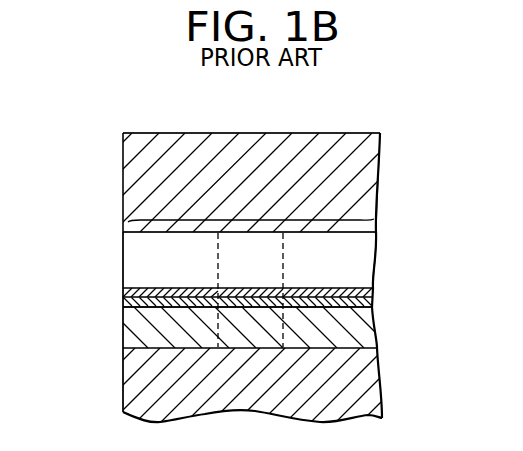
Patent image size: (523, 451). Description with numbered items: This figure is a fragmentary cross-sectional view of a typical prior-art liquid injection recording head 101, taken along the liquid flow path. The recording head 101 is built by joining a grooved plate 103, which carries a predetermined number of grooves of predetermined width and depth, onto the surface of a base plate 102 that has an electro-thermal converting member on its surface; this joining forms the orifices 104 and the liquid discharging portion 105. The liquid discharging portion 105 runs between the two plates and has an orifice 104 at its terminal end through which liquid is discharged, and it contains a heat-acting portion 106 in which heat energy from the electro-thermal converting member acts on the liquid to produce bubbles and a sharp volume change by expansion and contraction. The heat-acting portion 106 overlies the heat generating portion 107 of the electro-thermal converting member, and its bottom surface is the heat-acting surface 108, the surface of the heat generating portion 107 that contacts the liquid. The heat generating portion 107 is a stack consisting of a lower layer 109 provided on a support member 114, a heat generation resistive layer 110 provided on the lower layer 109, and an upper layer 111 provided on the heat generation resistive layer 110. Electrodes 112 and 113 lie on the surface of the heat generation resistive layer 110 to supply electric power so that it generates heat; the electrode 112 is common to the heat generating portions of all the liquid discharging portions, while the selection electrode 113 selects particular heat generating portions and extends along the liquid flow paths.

The recording head 101 is at (345, 128).
The base plate 102 is at (118, 288).
The grooved plate 103 is at (210, 140).
The orifice 104 is at (123, 248).
The liquid discharging portion 105 is at (256, 214).
The heat-acting portion 106 is at (265, 255).
The heat generating portion 107 is at (274, 310).
The heat-acting surface 108 is at (260, 293).
The lower layer 109 is at (356, 330).
The heat generation resistive layer 110 is at (168, 300).
The upper layer 111 is at (243, 292).
The electrode 112 is at (125, 301).
The selection electrode 113 is at (374, 298).
The support member 114 is at (356, 386).